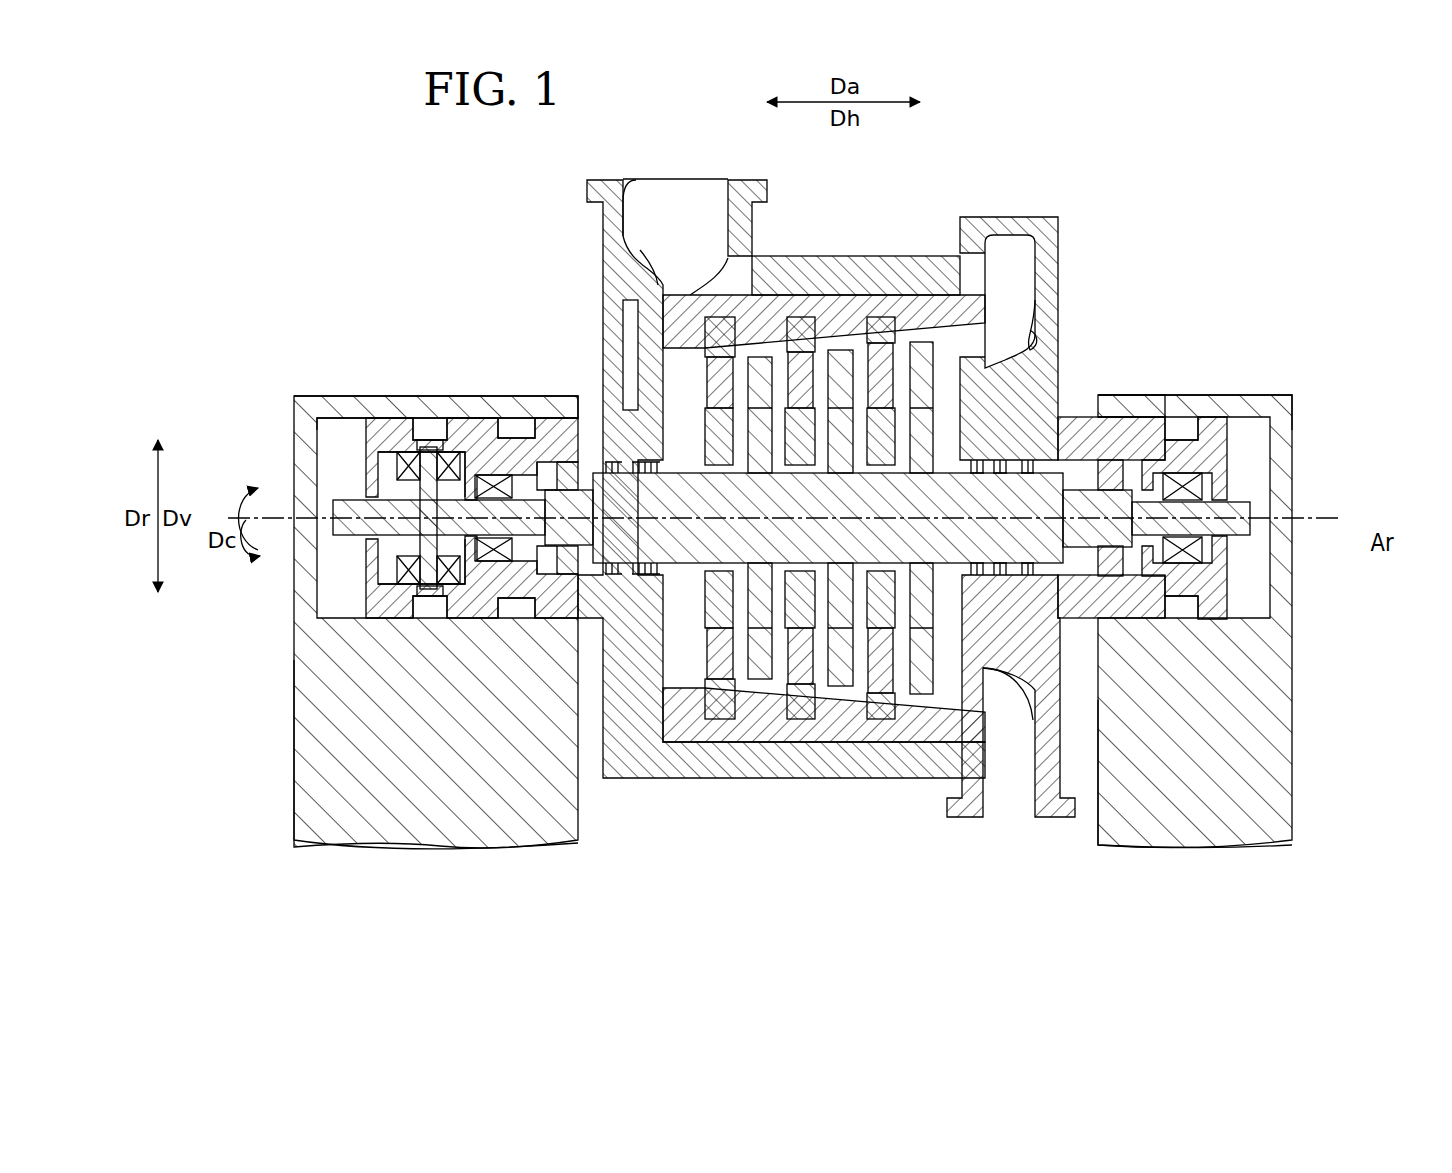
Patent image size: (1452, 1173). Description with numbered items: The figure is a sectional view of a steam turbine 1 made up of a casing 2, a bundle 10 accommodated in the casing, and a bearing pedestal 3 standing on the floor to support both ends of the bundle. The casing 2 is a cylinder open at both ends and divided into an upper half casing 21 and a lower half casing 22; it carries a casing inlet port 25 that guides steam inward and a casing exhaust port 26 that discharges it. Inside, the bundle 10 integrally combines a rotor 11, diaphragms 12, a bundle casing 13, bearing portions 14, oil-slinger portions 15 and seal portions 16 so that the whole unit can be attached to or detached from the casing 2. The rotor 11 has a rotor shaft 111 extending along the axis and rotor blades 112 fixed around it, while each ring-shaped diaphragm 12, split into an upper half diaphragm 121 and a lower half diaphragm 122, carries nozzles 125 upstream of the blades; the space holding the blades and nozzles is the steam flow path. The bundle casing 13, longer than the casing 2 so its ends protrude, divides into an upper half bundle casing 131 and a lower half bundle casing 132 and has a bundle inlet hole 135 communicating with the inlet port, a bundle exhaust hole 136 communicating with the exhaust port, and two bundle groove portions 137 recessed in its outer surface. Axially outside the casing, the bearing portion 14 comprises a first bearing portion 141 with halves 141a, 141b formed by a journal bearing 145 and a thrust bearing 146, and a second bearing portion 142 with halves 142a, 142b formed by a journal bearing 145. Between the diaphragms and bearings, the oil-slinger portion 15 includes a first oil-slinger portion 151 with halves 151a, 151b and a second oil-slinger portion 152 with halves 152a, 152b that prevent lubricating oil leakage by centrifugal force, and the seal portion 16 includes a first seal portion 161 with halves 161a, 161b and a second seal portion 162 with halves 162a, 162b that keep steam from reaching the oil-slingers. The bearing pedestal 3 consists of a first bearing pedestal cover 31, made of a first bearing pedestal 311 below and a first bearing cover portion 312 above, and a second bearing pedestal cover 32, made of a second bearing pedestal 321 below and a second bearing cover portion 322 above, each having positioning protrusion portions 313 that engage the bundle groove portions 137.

The steam turbine 1 is at (1263, 196).
The casing 2 is at (951, 514).
The bearing pedestal 3 is at (798, 575).
The bundle 10 is at (1076, 414).
The rotor 11 is at (686, 572).
The diaphragm 12 is at (791, 490).
The bundle casing 13 is at (1285, 490).
The bearing portion 14 is at (872, 593).
The oil-slinger portion 15 is at (887, 638).
The seal portion 16 is at (866, 606).
The upper half casing 21 is at (848, 264).
The lower half casing 22 is at (744, 501).
The casing inlet port 25 is at (634, 195).
The casing exhaust port 26 is at (1032, 290).
The first bearing pedestal cover 31 is at (373, 575).
The second bearing pedestal cover 32 is at (1262, 597).
The rotor shaft 111 is at (1120, 410).
The rotor blade 112 is at (722, 372).
The upper half diaphragm 121 is at (757, 362).
The lower half diaphragm 122 is at (760, 682).
The nozzle 125 is at (718, 325).
The upper half bundle casing 131 is at (1215, 435).
The lower half bundle casing 132 is at (1230, 600).
The bundle inlet hole 135 is at (673, 292).
The bundle exhaust hole 136 is at (1062, 218).
The bundle groove portion 137 is at (507, 612).
The first bearing portion 141 is at (380, 586).
The upper half first bearing portion 141a is at (405, 464).
The lower half first bearing portion 141b is at (447, 600).
The second bearing portion 142 is at (1302, 606).
The upper half second bearing portion 142a is at (1186, 476).
The lower half second bearing portion 142b is at (1186, 566).
The journal bearing 145 is at (405, 572).
The thrust bearing 146 is at (432, 444).
The first oil-slinger portion 151 is at (521, 619).
The upper half first oil-slinger portion 151a is at (565, 465).
The lower half first oil-slinger portion 151b is at (563, 598).
The second oil-slinger portion 152 is at (1182, 638).
The upper half second oil-slinger portion 152a is at (1112, 470).
The lower half second oil-slinger portion 152b is at (1110, 578).
The first seal portion 161 is at (589, 603).
The upper half first seal portion 161a is at (630, 466).
The lower half first seal portion 161b is at (632, 576).
The second seal portion 162 is at (1070, 613).
The upper half second seal portion 162a is at (1002, 462).
The lower half second seal portion 162b is at (1002, 576).
The first bearing pedestal 311 is at (320, 780).
The first bearing cover portion 312 is at (318, 408).
The positioning protrusion portion 313 is at (447, 455).
The second bearing pedestal 321 is at (1265, 780).
The second bearing cover portion 322 is at (1285, 440).